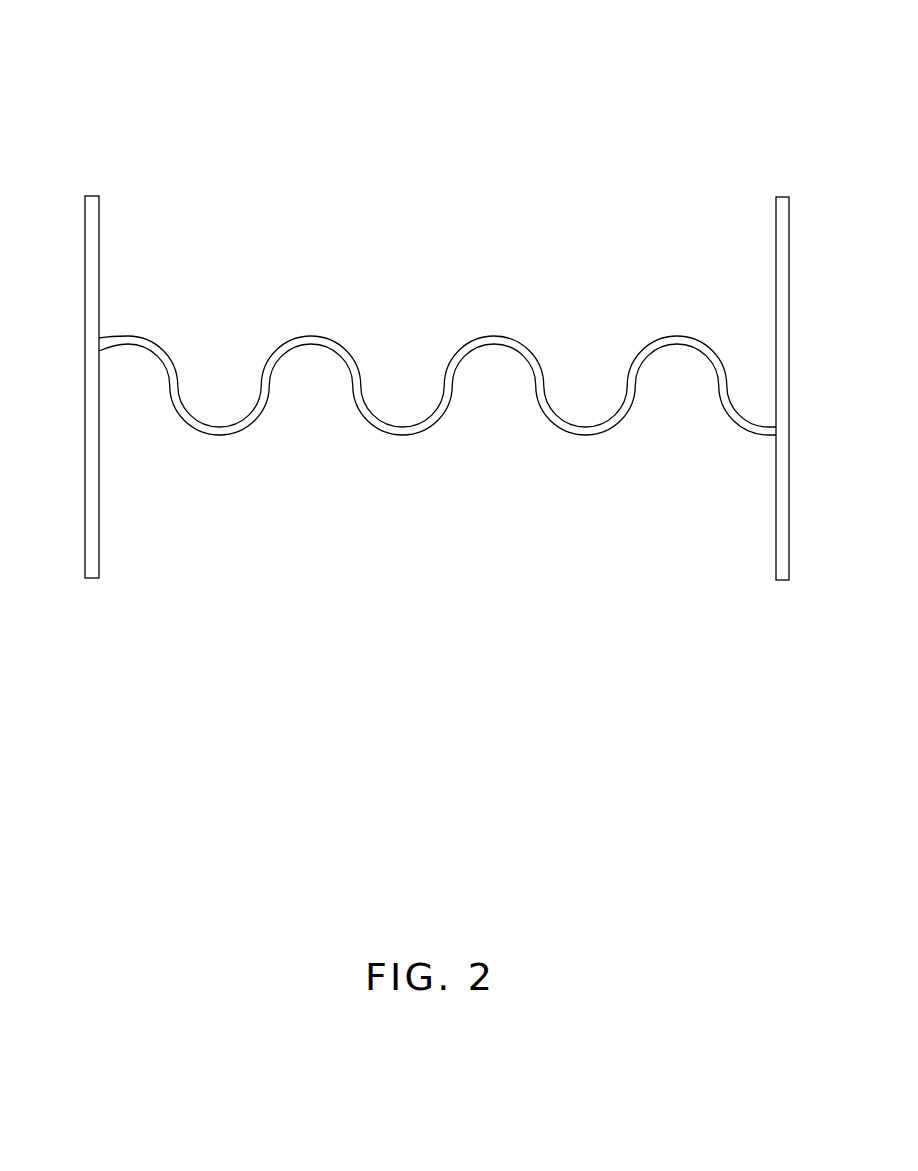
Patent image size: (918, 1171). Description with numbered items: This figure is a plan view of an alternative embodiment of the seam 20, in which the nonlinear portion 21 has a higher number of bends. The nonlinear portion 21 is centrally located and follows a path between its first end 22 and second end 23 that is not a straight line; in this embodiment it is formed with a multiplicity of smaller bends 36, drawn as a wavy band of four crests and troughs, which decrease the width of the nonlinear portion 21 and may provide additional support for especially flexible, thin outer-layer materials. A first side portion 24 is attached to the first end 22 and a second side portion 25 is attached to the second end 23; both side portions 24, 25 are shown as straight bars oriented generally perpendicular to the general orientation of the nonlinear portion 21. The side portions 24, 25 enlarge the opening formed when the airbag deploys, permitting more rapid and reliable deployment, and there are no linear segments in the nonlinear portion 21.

The seam 20 is at (325, 82).
The nonlinear portion 21 is at (449, 240).
The first end 22 is at (280, 585).
The second end 23 is at (670, 585).
The first side portion 24 is at (88, 194).
The second side portion 25 is at (775, 213).
The smaller bends 36 is at (135, 336).